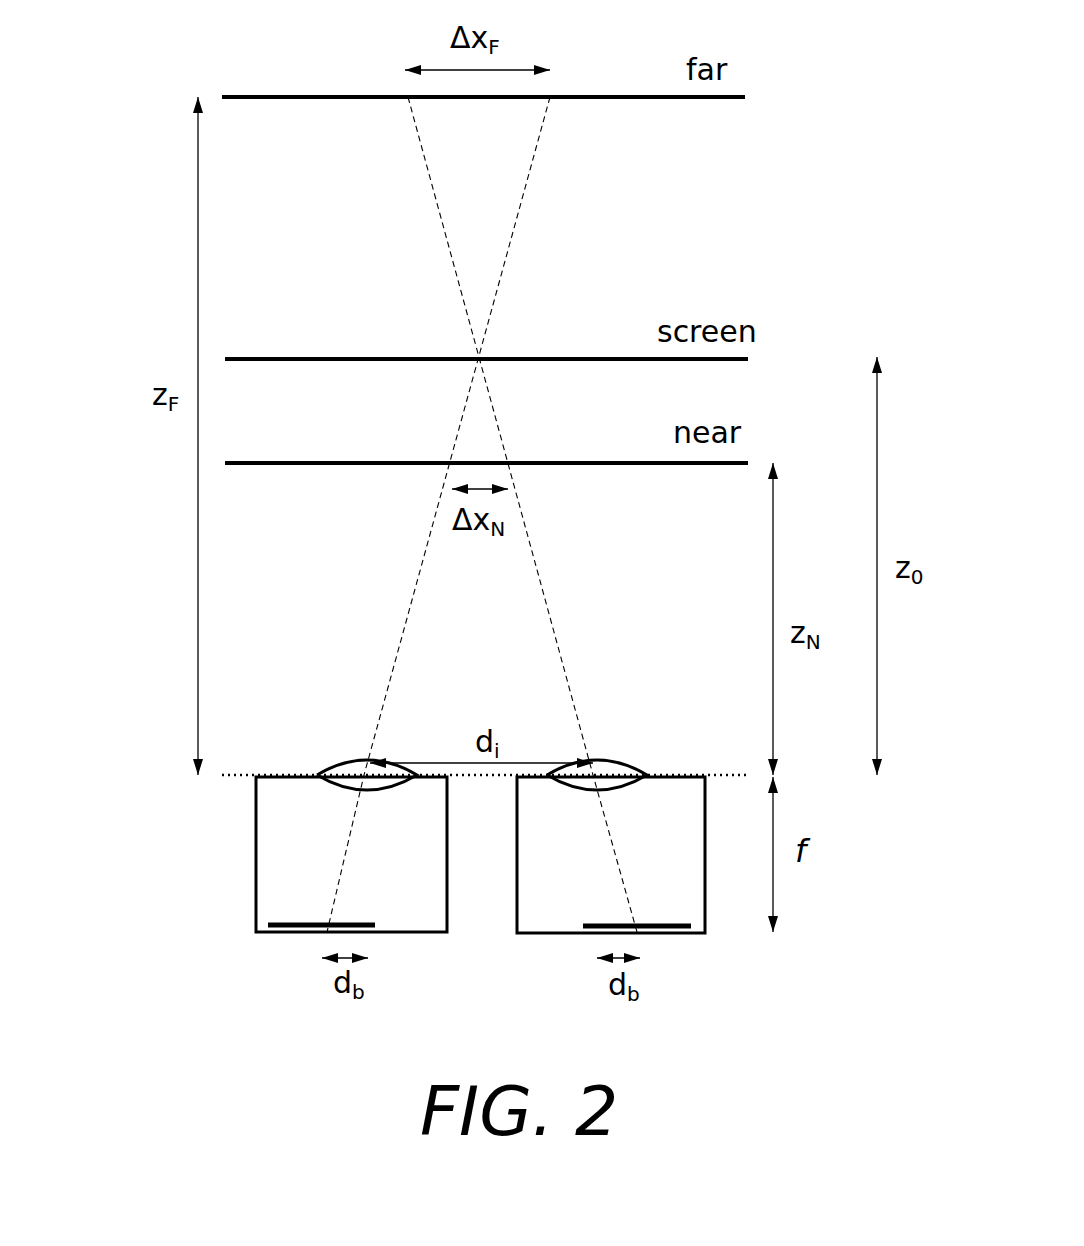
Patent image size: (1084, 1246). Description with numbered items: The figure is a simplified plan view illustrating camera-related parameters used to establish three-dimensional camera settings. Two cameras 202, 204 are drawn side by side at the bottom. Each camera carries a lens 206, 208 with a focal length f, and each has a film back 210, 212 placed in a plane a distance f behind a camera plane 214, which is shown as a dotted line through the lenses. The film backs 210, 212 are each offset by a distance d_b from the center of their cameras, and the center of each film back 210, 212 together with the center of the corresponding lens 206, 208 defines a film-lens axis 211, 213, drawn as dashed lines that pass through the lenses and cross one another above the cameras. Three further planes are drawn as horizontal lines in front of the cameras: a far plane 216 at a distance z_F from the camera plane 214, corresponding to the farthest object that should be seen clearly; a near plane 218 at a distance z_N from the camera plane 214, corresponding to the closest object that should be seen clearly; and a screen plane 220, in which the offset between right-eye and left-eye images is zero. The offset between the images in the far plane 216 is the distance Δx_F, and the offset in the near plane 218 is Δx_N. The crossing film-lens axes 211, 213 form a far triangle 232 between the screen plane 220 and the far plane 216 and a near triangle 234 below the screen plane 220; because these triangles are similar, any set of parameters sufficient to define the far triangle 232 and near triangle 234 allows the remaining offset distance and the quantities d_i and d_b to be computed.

The camera 202 is at (256, 898).
The camera 204 is at (537, 935).
The lens 206 is at (339, 762).
The lens 208 is at (620, 762).
The film back 210 is at (295, 927).
The film-lens axis 211 is at (413, 598).
The film back 212 is at (648, 928).
The film-lens axis 213 is at (545, 598).
The camera plane 214 is at (233, 778).
The far plane 216 is at (716, 99).
The near plane 218 is at (275, 461).
The screen plane 220 is at (258, 357).
The far triangle 232 is at (494, 183).
The near triangle 234 is at (507, 660).